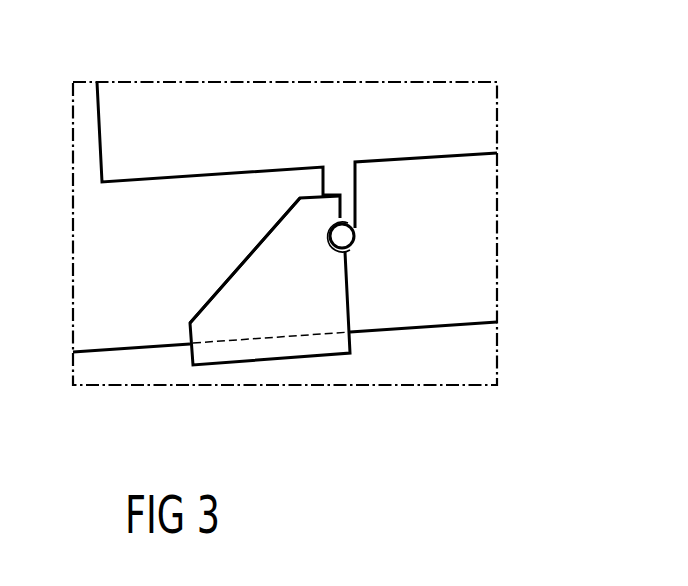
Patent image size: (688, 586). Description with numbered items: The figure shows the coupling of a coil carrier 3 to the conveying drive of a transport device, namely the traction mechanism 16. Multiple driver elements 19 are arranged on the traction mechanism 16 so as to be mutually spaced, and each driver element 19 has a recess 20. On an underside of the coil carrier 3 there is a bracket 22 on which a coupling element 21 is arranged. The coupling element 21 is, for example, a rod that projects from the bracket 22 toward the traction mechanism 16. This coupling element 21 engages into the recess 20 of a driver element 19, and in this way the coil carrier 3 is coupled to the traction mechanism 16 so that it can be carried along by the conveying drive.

The coil carrier 3 is at (483, 110).
The traction mechanism 16 is at (140, 347).
The driver element 19 is at (348, 312).
The recess 20 is at (322, 230).
The coupling element 21 is at (346, 240).
The bracket 22 is at (342, 182).